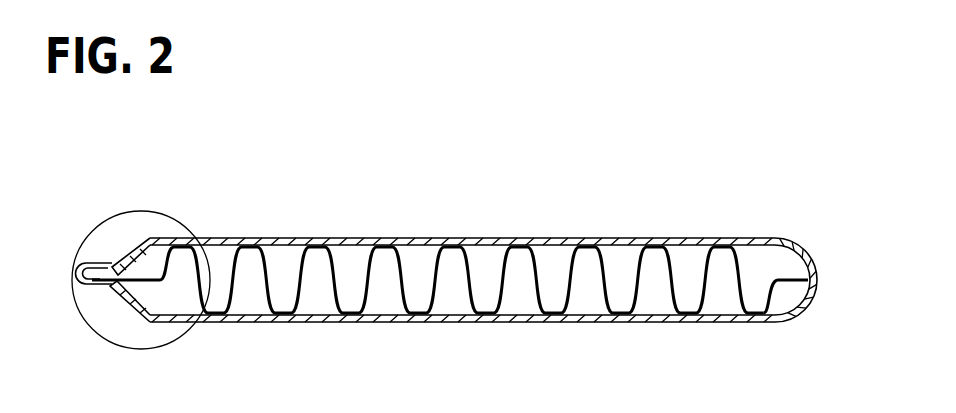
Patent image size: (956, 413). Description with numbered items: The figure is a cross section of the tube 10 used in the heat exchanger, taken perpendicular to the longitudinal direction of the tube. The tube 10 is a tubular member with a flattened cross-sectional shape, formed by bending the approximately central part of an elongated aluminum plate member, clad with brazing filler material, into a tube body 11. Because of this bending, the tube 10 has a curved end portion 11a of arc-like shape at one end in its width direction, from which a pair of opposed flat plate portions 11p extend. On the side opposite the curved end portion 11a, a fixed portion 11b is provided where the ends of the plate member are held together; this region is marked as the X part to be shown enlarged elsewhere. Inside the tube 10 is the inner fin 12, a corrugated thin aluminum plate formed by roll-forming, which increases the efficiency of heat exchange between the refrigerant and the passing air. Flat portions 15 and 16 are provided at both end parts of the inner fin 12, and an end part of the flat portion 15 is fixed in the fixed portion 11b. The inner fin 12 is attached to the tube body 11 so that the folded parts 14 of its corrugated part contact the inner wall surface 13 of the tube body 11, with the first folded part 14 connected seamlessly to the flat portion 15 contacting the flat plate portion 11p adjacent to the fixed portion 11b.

The tube 10 is at (440, 272).
The tube body 11 is at (440, 272).
The curved end portion 11a is at (804, 308).
The fixed portion 11b is at (92, 302).
The flat plate portions 11p is at (513, 238).
The inner fin 12 is at (455, 229).
The inner wall surface 13 is at (353, 257).
The folded parts 14 is at (415, 323).
The flat portion 15 is at (148, 277).
The flat portion 16 is at (790, 277).
The X part X is at (192, 350).